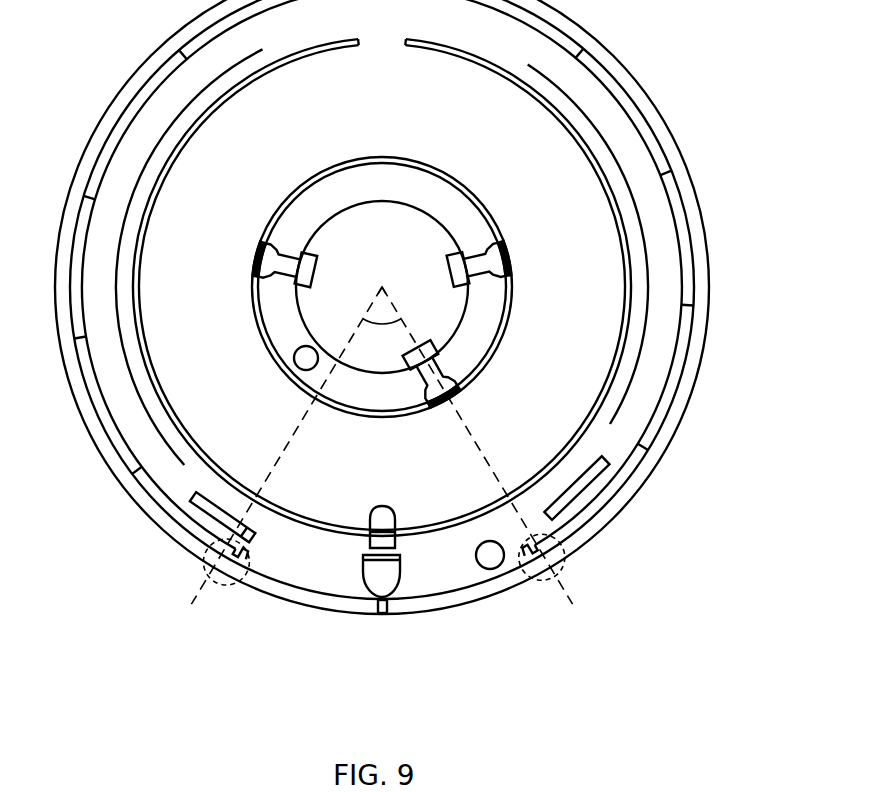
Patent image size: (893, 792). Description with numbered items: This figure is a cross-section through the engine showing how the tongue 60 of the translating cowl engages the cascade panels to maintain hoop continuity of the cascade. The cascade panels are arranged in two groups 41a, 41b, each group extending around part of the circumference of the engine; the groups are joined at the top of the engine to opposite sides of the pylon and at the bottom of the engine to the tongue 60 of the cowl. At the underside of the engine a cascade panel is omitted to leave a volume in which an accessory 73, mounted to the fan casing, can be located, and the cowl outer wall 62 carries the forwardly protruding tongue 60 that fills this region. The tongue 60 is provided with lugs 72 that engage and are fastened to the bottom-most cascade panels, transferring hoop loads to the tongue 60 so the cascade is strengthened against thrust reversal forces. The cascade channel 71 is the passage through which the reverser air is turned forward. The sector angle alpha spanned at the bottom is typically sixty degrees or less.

The cascade panel group 41a is at (660, 413).
The cascade panel group 41b is at (162, 502).
The tongue 60 is at (413, 608).
The radially outer wall 62 is at (618, 505).
The cascade channel 71 is at (233, 555).
The lugs 72 is at (220, 567).
The accessory 73 is at (380, 583).